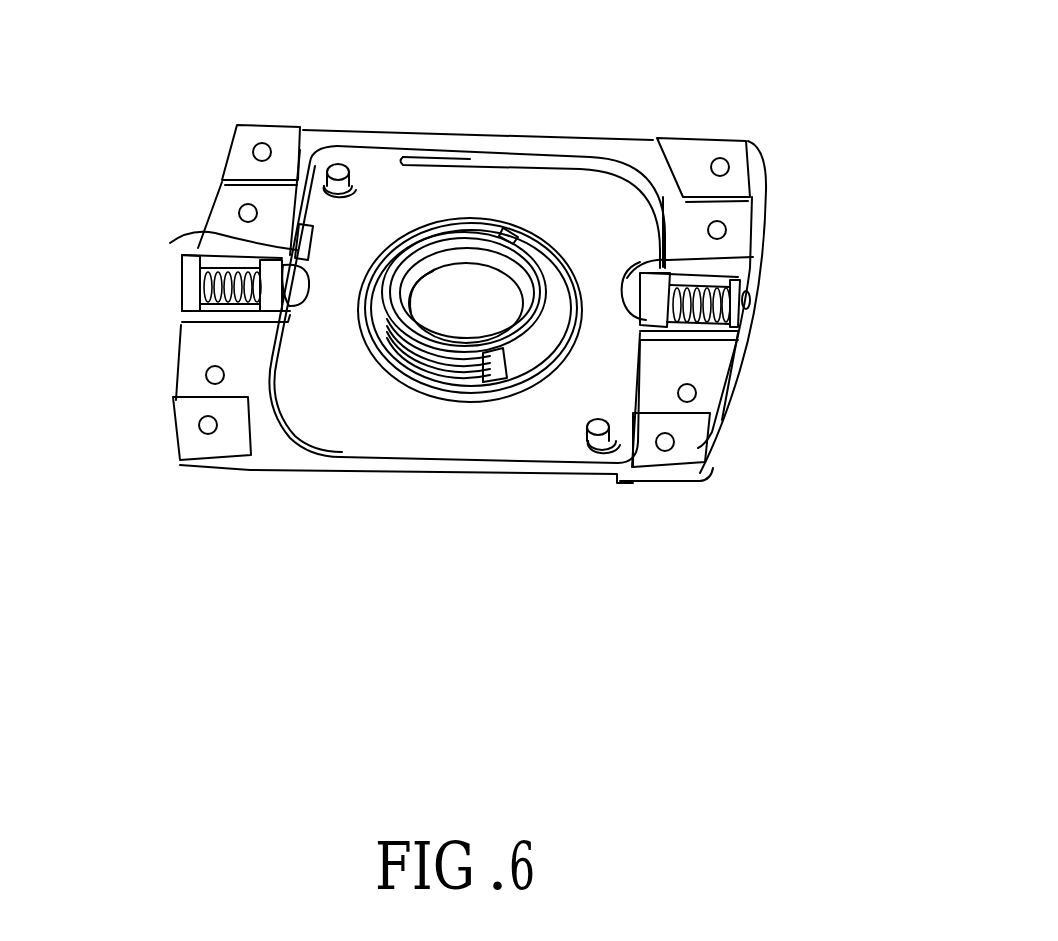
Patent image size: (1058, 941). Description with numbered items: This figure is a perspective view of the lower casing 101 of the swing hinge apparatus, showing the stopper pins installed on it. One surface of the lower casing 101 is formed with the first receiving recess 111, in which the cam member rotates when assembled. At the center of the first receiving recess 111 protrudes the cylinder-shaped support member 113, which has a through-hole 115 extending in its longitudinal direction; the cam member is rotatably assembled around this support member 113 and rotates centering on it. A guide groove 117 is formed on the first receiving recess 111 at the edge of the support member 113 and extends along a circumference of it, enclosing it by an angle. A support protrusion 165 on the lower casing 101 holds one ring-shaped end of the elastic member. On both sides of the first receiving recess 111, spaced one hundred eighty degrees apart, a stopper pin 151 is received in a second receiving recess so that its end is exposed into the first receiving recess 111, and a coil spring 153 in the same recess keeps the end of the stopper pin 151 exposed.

The lower casing 101 is at (781, 146).
The first receiving recess 111 is at (355, 418).
The support member 113 is at (503, 345).
The through-hole 115 is at (468, 302).
The guide groove 117 is at (385, 385).
The stopper pin 151 is at (293, 243).
The coil spring 153 is at (196, 282).
The support protrusion 165 is at (590, 446).